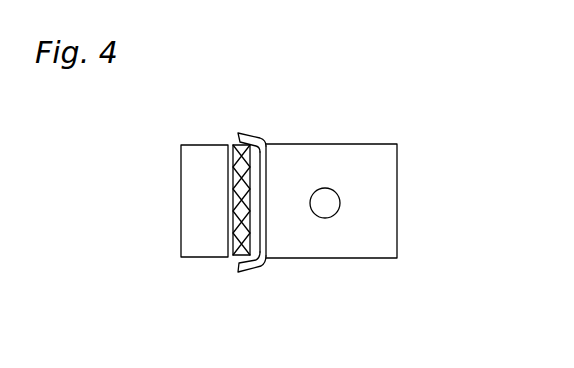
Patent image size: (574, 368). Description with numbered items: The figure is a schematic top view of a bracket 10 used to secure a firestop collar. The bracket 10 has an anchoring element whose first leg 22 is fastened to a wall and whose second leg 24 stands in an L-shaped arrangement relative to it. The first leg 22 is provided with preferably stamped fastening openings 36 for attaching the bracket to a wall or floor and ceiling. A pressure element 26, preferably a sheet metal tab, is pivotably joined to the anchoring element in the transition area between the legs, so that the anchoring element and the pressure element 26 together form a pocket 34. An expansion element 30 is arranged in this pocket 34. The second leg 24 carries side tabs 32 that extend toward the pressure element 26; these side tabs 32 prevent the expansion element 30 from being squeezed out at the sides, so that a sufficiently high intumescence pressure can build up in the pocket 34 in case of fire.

The bracket 10 is at (352, 83).
The pressure element 26 is at (196, 145).
The expansion element 30 is at (228, 262).
The side tabs 32 is at (247, 132).
The pocket 34 is at (258, 231).
The second leg 24 is at (308, 202).
The first leg 22 is at (381, 173).
The fastening openings 36 is at (333, 216).